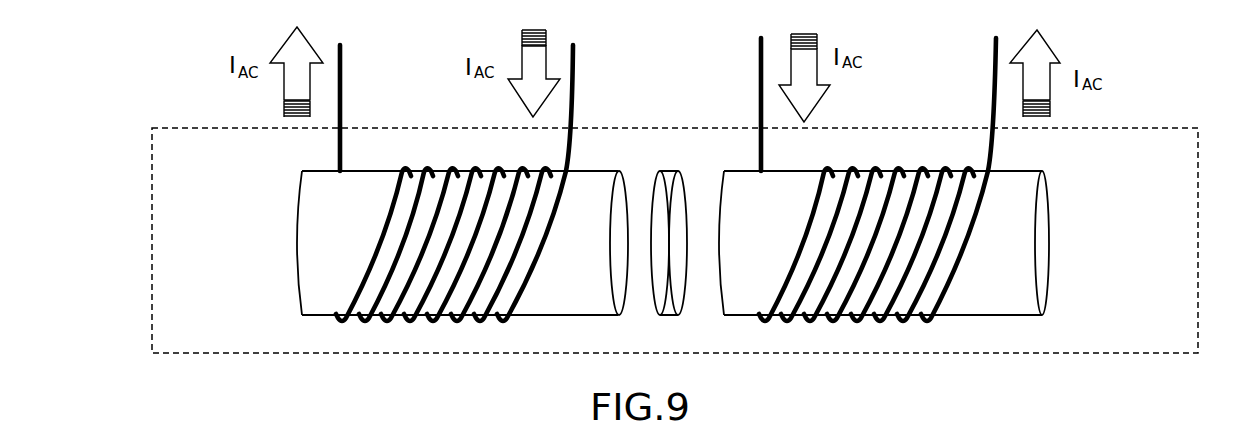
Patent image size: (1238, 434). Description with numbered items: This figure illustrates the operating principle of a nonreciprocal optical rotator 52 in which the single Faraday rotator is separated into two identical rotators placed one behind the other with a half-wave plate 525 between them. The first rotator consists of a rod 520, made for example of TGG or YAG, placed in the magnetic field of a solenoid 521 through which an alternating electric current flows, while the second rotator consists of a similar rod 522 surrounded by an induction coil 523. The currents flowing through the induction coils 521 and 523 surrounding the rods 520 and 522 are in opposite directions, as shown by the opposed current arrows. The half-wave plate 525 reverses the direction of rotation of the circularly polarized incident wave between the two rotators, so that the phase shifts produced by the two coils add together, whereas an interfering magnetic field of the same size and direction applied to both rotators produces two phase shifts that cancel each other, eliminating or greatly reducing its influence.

The nonreciprocal optical rotator 52 is at (113, 309).
The rod 520 is at (325, 230).
The solenoid 521 is at (421, 182).
The rod 522 is at (1042, 230).
The induction coil 523 is at (917, 178).
The half-wave plate 525 is at (672, 183).